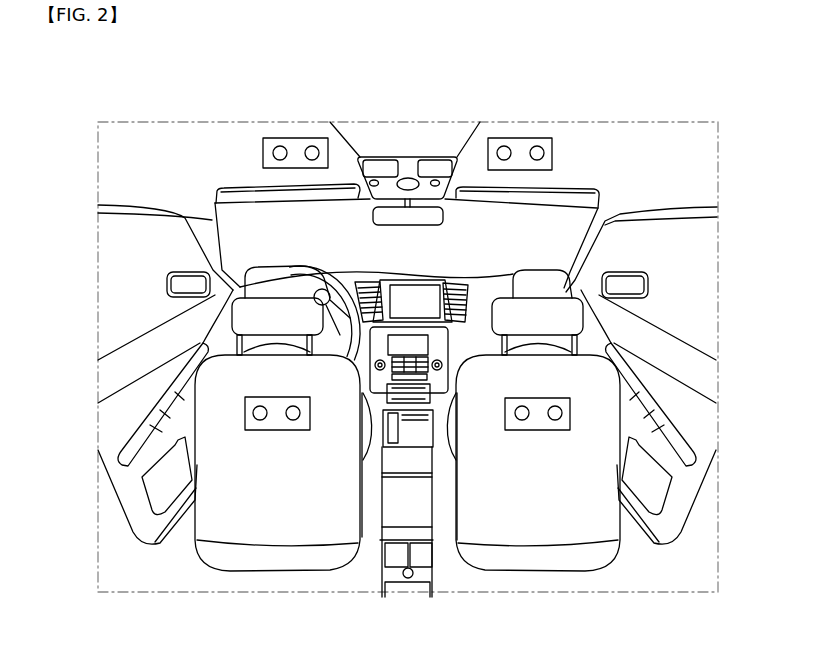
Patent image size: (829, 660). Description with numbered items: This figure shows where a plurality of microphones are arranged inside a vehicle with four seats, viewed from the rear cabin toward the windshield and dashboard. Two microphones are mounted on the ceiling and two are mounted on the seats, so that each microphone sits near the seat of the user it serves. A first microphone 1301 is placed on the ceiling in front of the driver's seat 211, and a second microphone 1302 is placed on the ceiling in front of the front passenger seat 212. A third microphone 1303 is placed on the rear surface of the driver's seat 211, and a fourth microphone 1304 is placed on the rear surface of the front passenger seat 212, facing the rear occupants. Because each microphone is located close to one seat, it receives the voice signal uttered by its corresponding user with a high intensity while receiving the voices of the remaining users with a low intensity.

The driver's seat 211 is at (232, 314).
The front passenger seat 212 is at (585, 318).
The first microphone 1301 is at (297, 137).
The second microphone 1302 is at (520, 137).
The third microphone 1303 is at (277, 430).
The fourth microphone 1304 is at (537, 430).